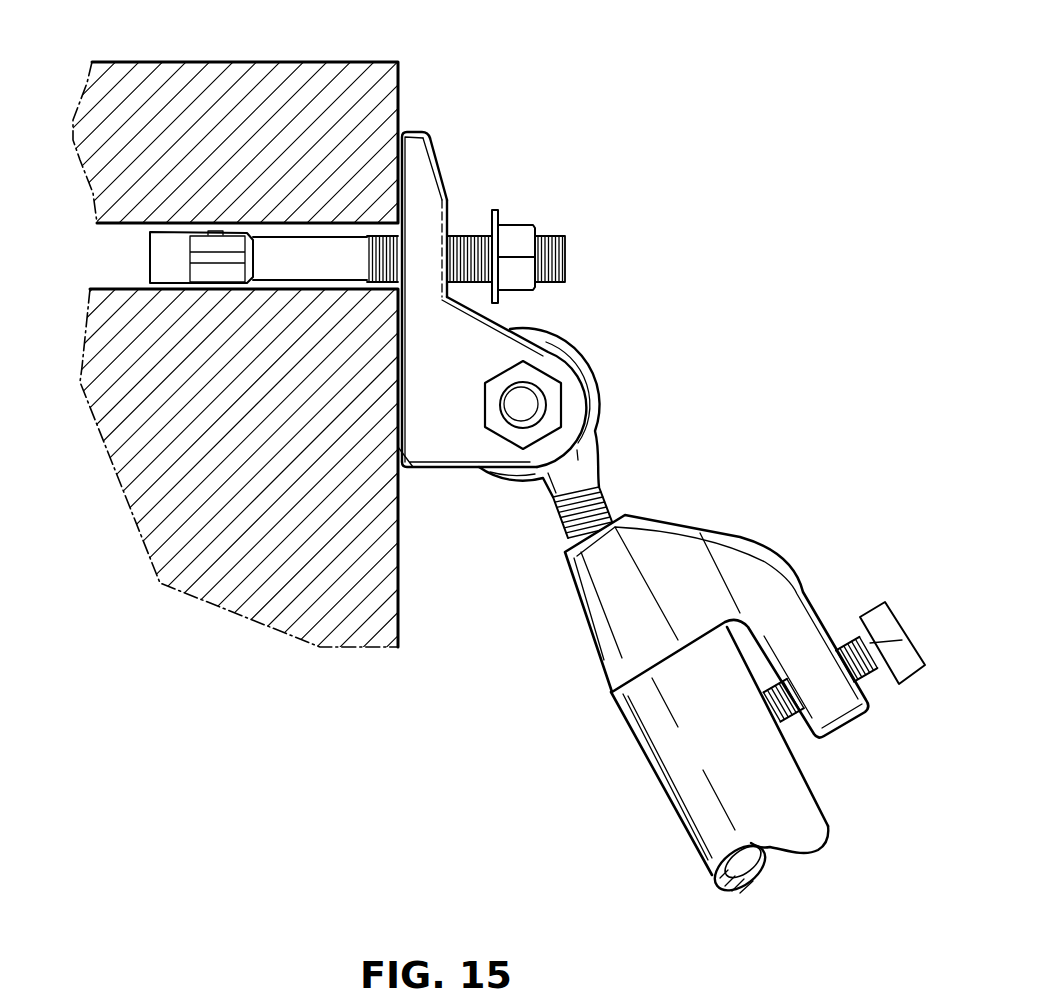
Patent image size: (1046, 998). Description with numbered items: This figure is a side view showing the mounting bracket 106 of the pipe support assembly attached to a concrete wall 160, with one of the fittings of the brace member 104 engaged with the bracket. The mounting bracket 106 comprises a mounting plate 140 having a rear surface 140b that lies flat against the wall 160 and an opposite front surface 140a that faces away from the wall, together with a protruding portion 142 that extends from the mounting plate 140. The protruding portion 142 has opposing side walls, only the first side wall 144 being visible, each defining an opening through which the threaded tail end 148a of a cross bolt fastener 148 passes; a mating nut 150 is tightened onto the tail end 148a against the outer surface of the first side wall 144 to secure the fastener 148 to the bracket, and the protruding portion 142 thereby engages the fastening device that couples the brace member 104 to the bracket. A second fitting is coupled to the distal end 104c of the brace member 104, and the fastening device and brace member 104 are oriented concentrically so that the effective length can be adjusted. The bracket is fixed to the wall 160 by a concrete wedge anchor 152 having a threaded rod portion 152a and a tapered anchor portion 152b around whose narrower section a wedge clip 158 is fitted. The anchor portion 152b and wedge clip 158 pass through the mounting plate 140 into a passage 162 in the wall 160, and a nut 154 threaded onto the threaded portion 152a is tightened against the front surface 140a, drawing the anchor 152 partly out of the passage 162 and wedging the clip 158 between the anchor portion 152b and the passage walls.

The brace member 104 is at (673, 779).
The distal end of the brace member 104c is at (650, 770).
The mounting bracket 106 is at (440, 503).
The mounting plate 140 is at (413, 350).
The front surface of the mounting plate 140a is at (445, 182).
The rear surface of the mounting plate 140b is at (397, 402).
The protruding portion 142 is at (470, 470).
The first side wall 144 is at (483, 358).
The cross bolt fastener 148 is at (530, 405).
The threaded tail end of the cross bolt fastener 148a is at (520, 412).
The nut 150 is at (541, 371).
The concrete wedge anchor 152 is at (348, 311).
The threaded rod portion 152a is at (565, 255).
The anchor portion 152b is at (167, 255).
The nut 154 is at (520, 233).
The wedge clip 158 is at (207, 240).
The concrete wall 160 is at (228, 490).
The passage 162 is at (170, 290).